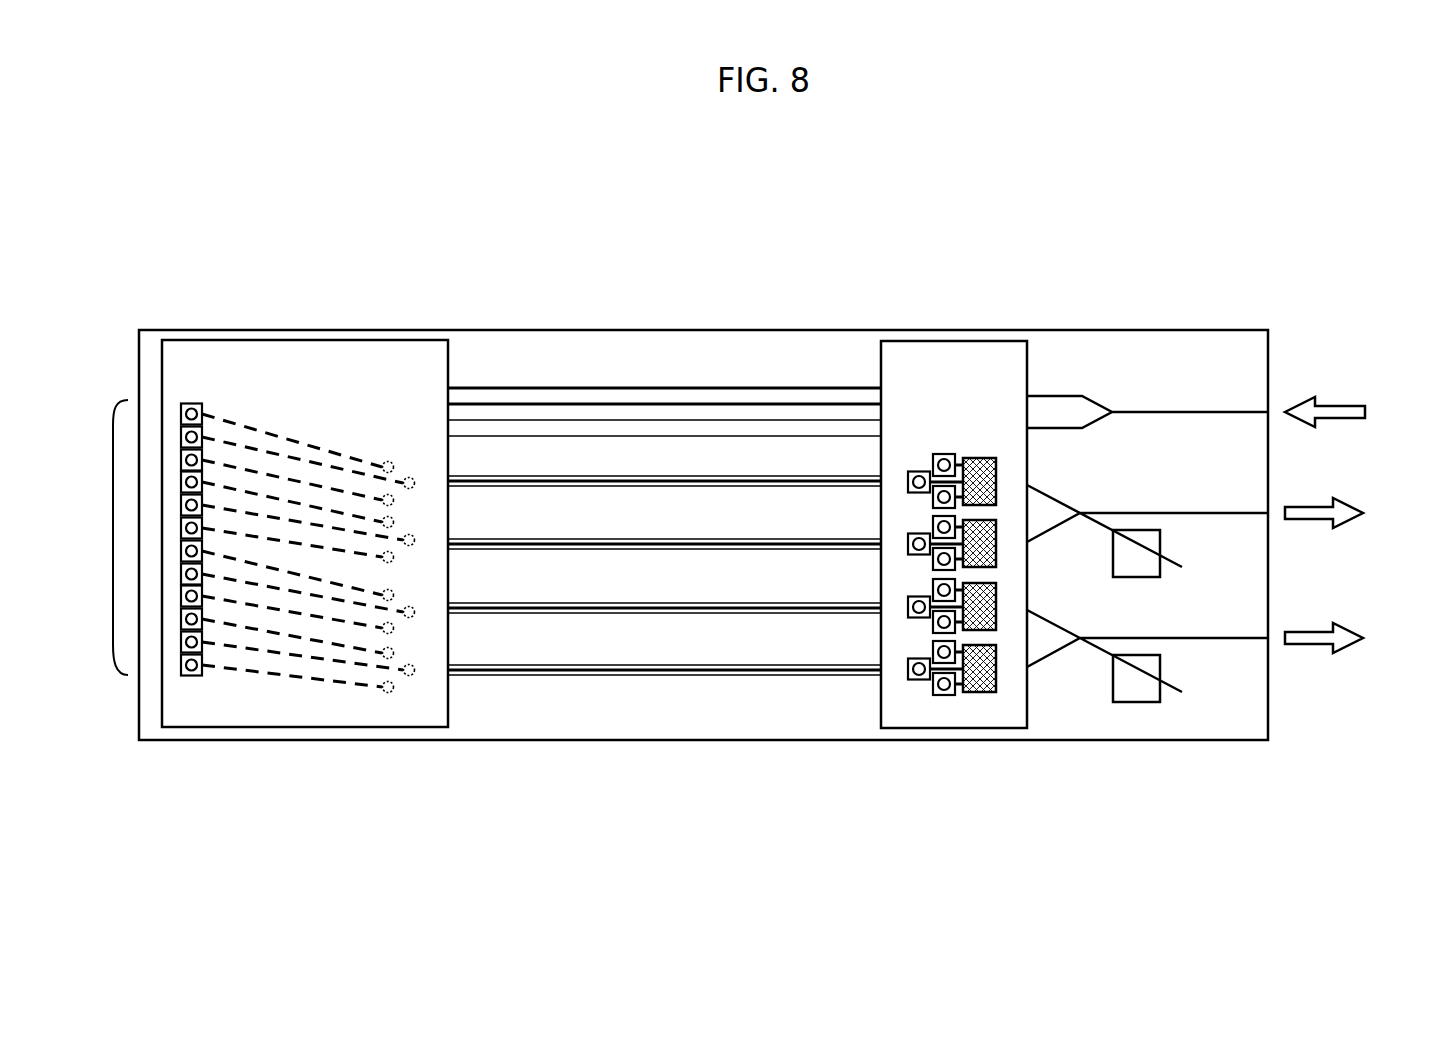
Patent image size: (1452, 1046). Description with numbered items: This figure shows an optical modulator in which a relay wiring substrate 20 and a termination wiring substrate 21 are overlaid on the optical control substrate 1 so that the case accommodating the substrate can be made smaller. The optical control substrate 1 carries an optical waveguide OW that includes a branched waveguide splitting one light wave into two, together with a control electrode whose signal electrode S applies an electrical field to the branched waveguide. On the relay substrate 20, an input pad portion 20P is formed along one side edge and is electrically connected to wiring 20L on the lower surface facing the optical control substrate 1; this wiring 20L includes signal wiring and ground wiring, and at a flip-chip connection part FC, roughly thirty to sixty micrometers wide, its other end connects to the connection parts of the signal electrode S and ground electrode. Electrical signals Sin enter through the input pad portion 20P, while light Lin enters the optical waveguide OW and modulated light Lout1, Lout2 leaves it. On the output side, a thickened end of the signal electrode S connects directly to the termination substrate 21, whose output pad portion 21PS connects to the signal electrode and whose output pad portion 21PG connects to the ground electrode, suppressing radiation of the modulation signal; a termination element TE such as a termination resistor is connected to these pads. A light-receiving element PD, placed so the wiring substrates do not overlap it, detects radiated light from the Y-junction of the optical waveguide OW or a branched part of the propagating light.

The optical control substrate 1 is at (1148, 352).
The wiring substrate (relay substrate) 20 is at (245, 380).
The input pad portion 20P is at (197, 676).
The wiring 20L is at (296, 680).
The flip-chip connection part FC is at (405, 668).
The optical waveguide OW is at (672, 388).
The signal electrode S is at (723, 675).
The wiring substrate (termination substrate) 21 is at (932, 362).
The output pad portion 21PS is at (918, 683).
The output pad portion 21PG is at (945, 697).
The termination element TE is at (990, 695).
The light-receiving element PD is at (1140, 690).
The input signals Sin is at (96, 537).
The input light Lin is at (1217, 412).
The output light 1 Lout1 is at (1231, 526).
The output light 2 Lout2 is at (1231, 651).